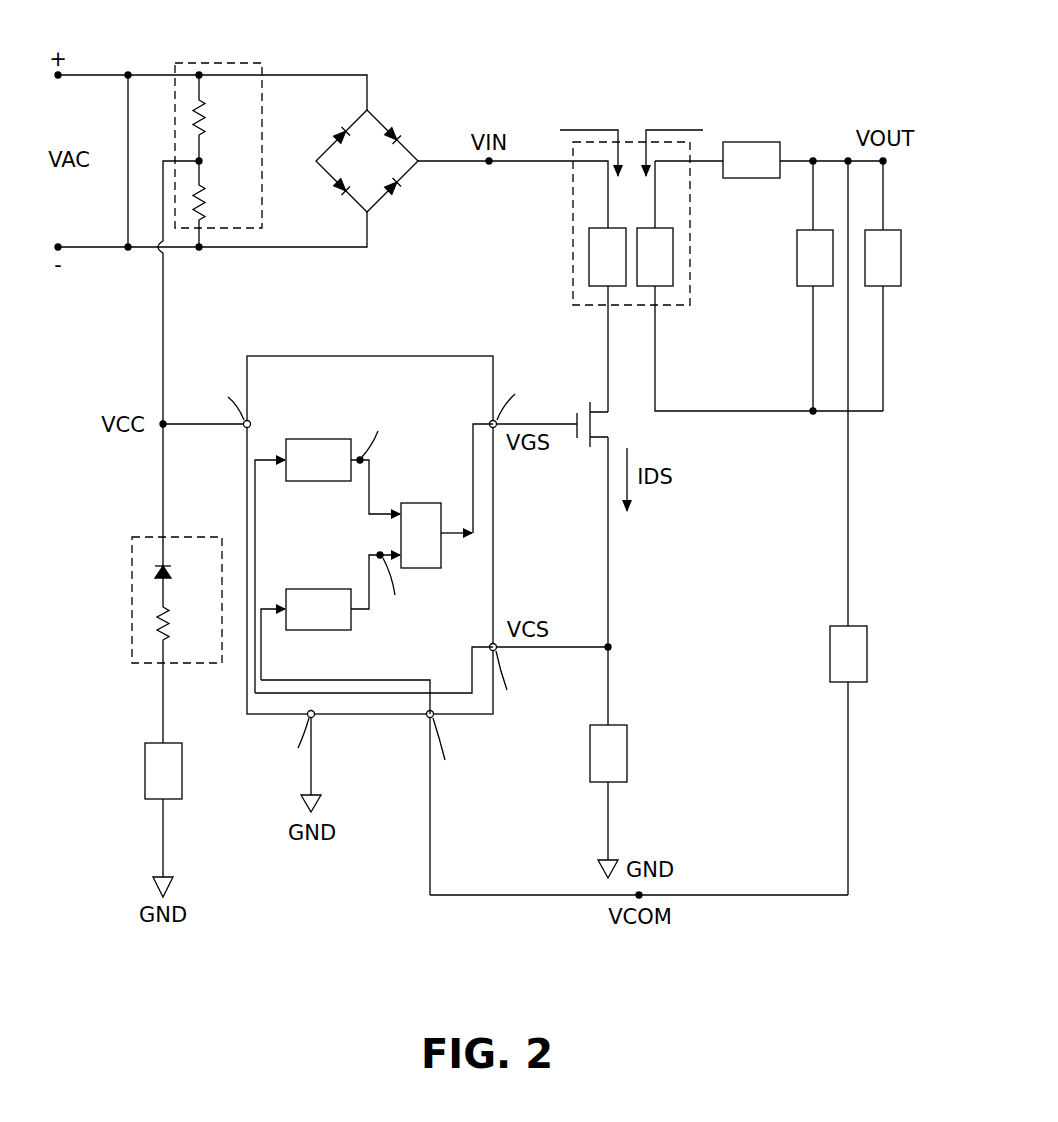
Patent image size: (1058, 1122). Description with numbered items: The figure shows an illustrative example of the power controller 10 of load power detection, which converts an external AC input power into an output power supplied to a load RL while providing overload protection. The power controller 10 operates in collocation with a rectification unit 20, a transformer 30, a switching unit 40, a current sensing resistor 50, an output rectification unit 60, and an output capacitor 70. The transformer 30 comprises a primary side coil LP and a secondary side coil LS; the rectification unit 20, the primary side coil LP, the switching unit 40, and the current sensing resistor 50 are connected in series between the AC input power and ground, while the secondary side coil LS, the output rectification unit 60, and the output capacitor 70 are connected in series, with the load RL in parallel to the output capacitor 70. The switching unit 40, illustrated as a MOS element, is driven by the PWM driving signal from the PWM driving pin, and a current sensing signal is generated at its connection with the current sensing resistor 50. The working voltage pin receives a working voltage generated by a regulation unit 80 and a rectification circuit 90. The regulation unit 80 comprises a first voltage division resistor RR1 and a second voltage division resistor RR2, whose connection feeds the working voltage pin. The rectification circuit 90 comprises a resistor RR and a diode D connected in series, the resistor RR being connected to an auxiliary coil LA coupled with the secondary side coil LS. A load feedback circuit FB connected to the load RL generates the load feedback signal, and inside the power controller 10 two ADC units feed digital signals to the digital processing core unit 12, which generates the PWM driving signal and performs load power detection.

The power controller 10 is at (371, 356).
The digital processing core unit 12 is at (421, 503).
The rectification unit 20 is at (386, 120).
The transformer 30 is at (631, 192).
The switching unit 40 is at (584, 405).
The current sensing resistor 50 is at (627, 752).
The output rectification unit 60 is at (751, 142).
The output capacitor 70 is at (797, 270).
The regulation unit 80 is at (218, 124).
The rectification circuit 90 is at (146, 583).
The first voltage division resistor RR1 is at (224, 118).
The second voltage division resistor RR2 is at (224, 204).
The primary side coil LP is at (589, 282).
The secondary side coil LS is at (673, 232).
The load RL is at (901, 246).
The load feedback circuit FB is at (830, 652).
The auxiliary coil LA is at (145, 770).
The diode D is at (173, 515).
The resistor RR is at (181, 675).